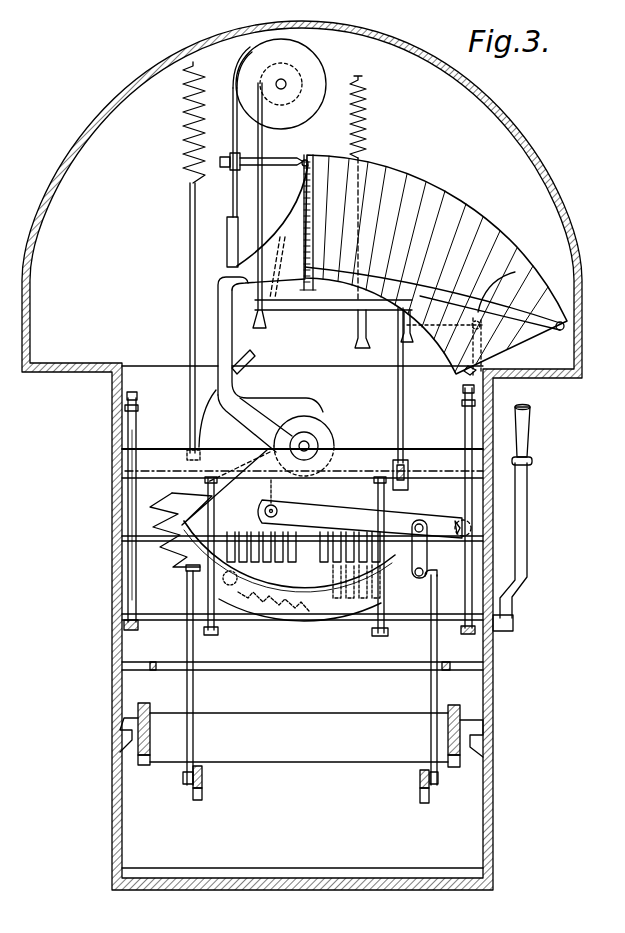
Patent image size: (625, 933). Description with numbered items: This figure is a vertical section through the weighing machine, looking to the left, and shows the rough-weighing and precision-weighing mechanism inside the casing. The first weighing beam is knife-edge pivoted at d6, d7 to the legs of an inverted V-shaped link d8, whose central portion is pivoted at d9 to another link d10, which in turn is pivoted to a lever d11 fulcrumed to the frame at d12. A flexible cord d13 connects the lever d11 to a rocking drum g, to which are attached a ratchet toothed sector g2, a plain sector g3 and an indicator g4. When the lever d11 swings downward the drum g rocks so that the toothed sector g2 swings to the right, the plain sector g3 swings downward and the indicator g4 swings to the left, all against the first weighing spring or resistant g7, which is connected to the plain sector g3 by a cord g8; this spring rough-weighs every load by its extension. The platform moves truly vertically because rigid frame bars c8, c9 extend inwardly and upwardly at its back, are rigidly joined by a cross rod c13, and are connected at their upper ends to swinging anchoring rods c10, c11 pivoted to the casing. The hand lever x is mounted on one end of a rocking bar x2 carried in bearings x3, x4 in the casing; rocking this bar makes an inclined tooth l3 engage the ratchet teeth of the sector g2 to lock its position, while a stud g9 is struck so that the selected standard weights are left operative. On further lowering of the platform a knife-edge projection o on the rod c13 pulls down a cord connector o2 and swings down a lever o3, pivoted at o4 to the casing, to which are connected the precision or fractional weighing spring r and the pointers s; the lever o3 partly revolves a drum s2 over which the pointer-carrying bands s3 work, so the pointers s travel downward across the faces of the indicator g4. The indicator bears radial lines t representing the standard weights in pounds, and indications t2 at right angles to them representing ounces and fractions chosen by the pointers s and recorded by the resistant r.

The drum s2 is at (313, 63).
The pointer carrying bands s3 is at (231, 100).
The pointers s is at (268, 148).
The precision or fractional weighing spring r is at (366, 118).
The first weighing spring g7 is at (190, 128).
The cord g8 is at (190, 262).
The indications t2 is at (308, 210).
The indicator g4 is at (436, 260).
The radial lines t is at (462, 217).
The pivot o4 is at (558, 320).
The rocking drum g is at (313, 437).
The plain sector g3 is at (205, 426).
The lever o3 is at (312, 312).
The cord connector o2 is at (398, 390).
The knife-edge projection o is at (393, 465).
The cross rod c13 is at (425, 471).
The swinging anchoring rod c10 is at (127, 409).
The rigid frame bar c8 is at (129, 507).
The bearing x3 is at (125, 620).
The rigid frame bar c9 is at (472, 507).
The swinging anchoring rod c11 is at (472, 402).
The hand lever x is at (528, 546).
The bearing x4 is at (513, 626).
The lever d11 is at (345, 520).
The flexible cord d13 is at (268, 487).
The fulcrum d12 is at (455, 527).
The link d10 is at (440, 560).
The pivot d9 is at (419, 578).
The ratchet toothed sector g2 is at (172, 524).
The inclined tooth l3 is at (296, 622).
The stud g9 is at (223, 586).
The rocking bar x2 is at (205, 628).
The inverted V-shaped link d8 is at (203, 688).
The knife-edge pivot d6 is at (184, 778).
The knife-edge pivot d7 is at (437, 783).